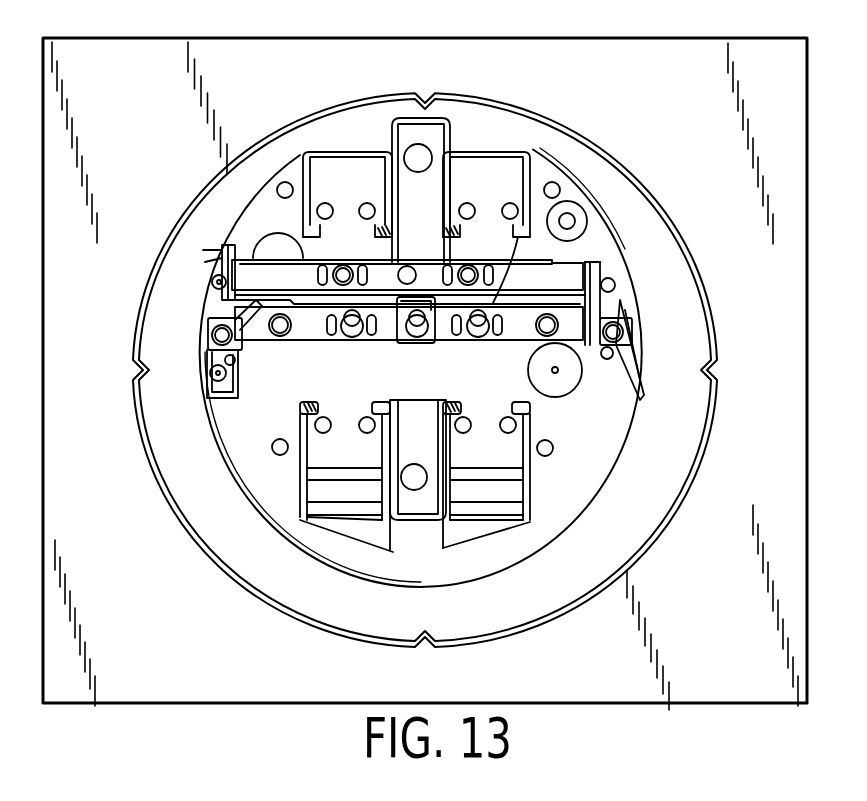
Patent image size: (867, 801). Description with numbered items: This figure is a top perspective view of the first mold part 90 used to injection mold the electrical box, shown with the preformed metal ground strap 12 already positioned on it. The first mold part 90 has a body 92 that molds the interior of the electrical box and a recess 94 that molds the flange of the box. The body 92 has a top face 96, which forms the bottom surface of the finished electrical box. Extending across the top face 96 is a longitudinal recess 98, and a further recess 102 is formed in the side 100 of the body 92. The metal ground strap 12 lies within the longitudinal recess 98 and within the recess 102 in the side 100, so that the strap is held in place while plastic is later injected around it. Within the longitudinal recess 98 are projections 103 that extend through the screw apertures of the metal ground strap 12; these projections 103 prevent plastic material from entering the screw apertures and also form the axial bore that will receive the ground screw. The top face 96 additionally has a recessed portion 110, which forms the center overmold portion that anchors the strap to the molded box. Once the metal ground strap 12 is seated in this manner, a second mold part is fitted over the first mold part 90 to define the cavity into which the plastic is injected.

The metal ground strap 12 is at (590, 265).
The first mold part 90 is at (185, 213).
The body 92 is at (610, 458).
The recess 94 is at (190, 290).
The top face 96 is at (270, 423).
The longitudinal recess 98 is at (263, 330).
The side 100 is at (622, 290).
The recess 102 is at (650, 367).
The projections 103 is at (350, 337).
The recessed portion 110 is at (422, 343).